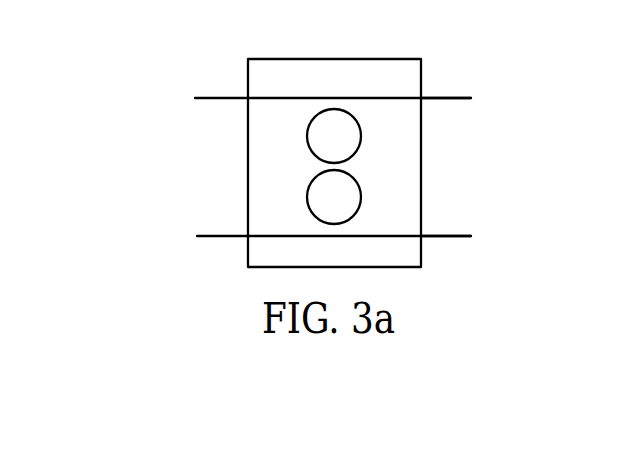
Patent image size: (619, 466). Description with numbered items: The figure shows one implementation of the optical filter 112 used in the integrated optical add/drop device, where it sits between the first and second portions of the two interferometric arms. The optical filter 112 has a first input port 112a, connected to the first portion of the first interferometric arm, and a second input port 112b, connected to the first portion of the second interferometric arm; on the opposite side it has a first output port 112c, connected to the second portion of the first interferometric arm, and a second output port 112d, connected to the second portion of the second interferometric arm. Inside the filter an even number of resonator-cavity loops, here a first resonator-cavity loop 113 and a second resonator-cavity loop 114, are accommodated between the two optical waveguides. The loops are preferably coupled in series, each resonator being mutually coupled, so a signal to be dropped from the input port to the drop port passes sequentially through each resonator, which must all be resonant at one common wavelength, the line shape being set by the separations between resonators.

The optical filter 112 is at (395, 184).
The first input port 112a is at (228, 95).
The second input port 112b is at (227, 236).
The first output port 112c is at (437, 98).
The second output port 112d is at (457, 238).
The first resonator-cavity loop 113 is at (322, 135).
The second resonator-cavity loop 114 is at (352, 199).